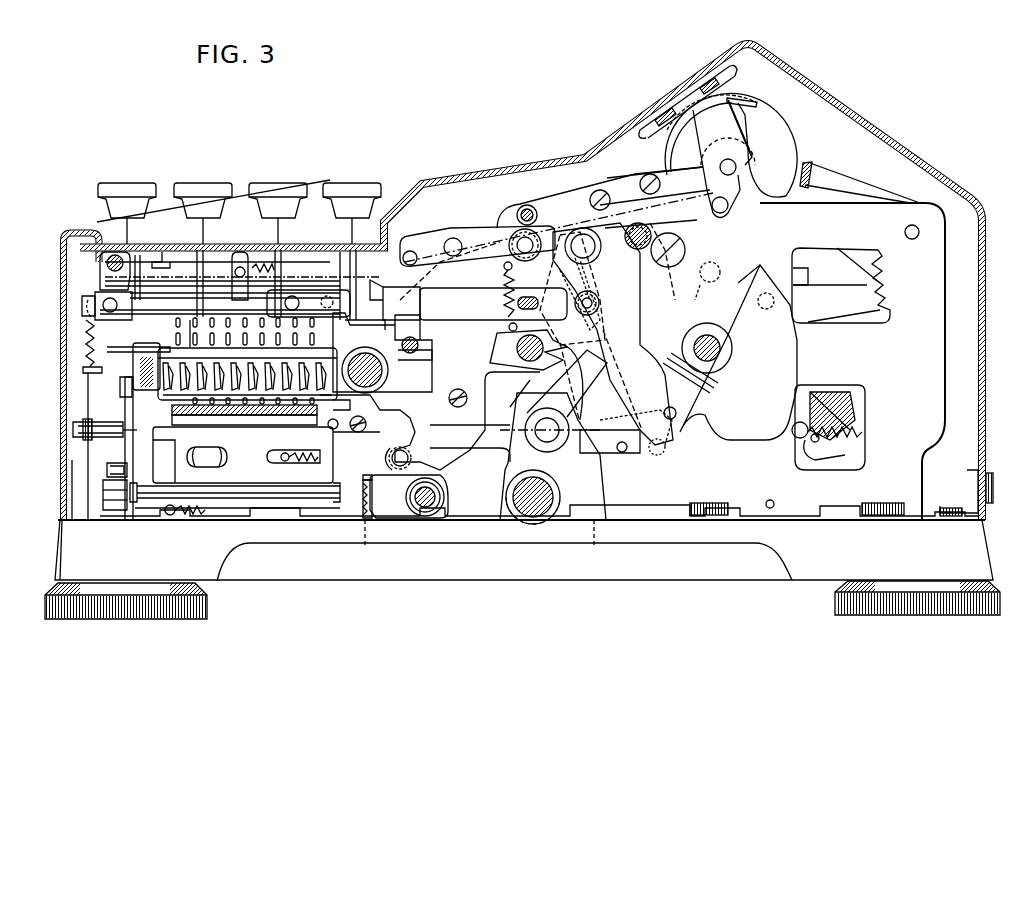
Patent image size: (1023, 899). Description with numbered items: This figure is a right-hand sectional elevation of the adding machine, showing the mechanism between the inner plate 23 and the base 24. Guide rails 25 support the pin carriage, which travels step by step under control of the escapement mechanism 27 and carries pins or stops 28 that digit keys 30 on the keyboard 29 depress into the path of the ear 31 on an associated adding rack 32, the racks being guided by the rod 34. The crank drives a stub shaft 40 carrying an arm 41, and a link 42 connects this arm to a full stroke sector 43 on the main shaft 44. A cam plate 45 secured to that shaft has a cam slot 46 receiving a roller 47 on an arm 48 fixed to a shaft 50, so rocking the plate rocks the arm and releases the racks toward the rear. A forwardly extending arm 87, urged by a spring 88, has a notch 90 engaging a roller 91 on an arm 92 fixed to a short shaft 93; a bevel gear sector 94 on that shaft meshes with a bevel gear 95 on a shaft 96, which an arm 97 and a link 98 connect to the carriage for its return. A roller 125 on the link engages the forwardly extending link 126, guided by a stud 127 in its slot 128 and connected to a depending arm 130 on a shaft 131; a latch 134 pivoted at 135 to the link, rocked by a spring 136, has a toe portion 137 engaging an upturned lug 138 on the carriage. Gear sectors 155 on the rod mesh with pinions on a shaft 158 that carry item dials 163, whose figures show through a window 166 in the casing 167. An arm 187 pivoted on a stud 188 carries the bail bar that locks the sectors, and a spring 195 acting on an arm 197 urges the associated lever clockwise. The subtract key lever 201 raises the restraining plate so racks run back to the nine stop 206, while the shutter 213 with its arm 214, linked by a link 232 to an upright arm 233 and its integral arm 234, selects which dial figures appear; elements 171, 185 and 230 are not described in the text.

The inner plate 23 is at (930, 300).
The base 24 is at (815, 548).
The guide rails 25 is at (222, 381).
The escapement mechanism 27 is at (75, 362).
The pins or stops 28 is at (228, 405).
The keyboard 29 is at (180, 237).
The digit keys 30 is at (260, 188).
The stop or ear 31 is at (162, 437).
The adding or actuating rack 32 is at (232, 470).
The rod 34 is at (769, 310).
The stub shaft 40 is at (545, 496).
The arm 41 is at (592, 497).
The link 42 is at (656, 310).
The full stroke sector 43 is at (745, 282).
The main shaft 44 is at (720, 348).
The cam plate 45 is at (790, 358).
The cam slot 46 is at (705, 280).
The roller 47 is at (587, 279).
The arm 48 is at (589, 288).
The shaft 50 is at (650, 262).
The forwardly extending arm 87 is at (492, 440).
The spring 88 is at (633, 455).
The notch 90 is at (400, 425).
The roller 91 is at (409, 496).
The arm 92 is at (405, 465).
The short shaft 93 is at (440, 500).
The bevel gear sector 94 is at (375, 518).
The bevel gear 95 is at (368, 476).
The shaft 96 is at (295, 500).
The arm 97 is at (145, 490).
The link 98 is at (122, 409).
The roller 125 is at (633, 176).
The forwardly extending link 126 is at (100, 275).
The stud 127 is at (505, 296).
The slot 128 is at (493, 288).
The depending arm 130 is at (108, 286).
The shaft 131 is at (115, 255).
The latch 134 is at (240, 262).
The pivot 135 is at (292, 298).
The spring 136 is at (268, 268).
The depending toe portion 137 is at (330, 340).
The upturned lug 138 is at (333, 345).
The gear sector 155 is at (880, 285).
The shaft 158 is at (738, 162).
The item dial 163 is at (780, 170).
The window 166 is at (670, 100).
The casing 167 is at (517, 166).
The pawl 171 is at (853, 412).
The rod 185 is at (840, 185).
The arm 187 is at (900, 160).
The stud 188 is at (913, 225).
The spring 195 is at (863, 432).
The arm 197 is at (845, 455).
The subtract key lever 201 is at (355, 185).
The nine stop 206 is at (353, 418).
The dial shield or shutter 213 is at (758, 104).
The arm 214 is at (723, 120).
The pin 230 is at (419, 345).
The link 232 is at (430, 248).
The upright arm 233 is at (386, 222).
The arm 234 is at (432, 358).